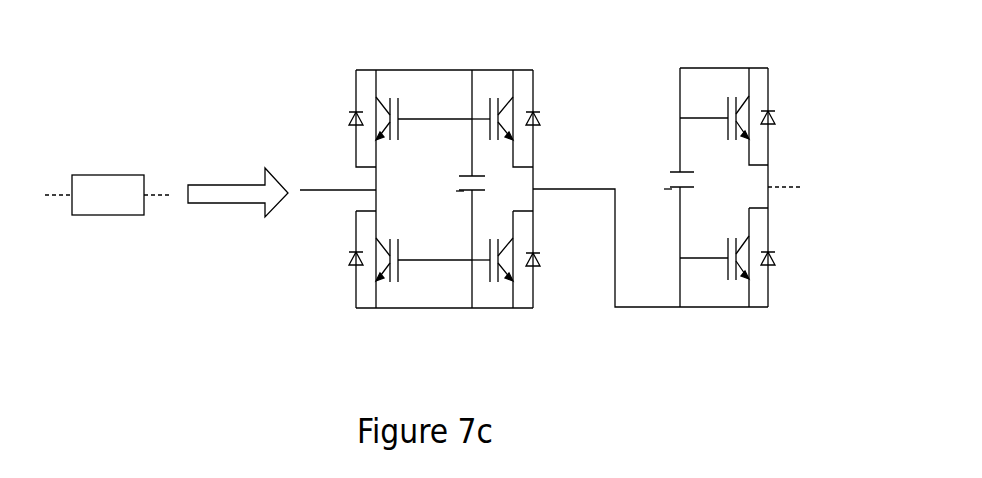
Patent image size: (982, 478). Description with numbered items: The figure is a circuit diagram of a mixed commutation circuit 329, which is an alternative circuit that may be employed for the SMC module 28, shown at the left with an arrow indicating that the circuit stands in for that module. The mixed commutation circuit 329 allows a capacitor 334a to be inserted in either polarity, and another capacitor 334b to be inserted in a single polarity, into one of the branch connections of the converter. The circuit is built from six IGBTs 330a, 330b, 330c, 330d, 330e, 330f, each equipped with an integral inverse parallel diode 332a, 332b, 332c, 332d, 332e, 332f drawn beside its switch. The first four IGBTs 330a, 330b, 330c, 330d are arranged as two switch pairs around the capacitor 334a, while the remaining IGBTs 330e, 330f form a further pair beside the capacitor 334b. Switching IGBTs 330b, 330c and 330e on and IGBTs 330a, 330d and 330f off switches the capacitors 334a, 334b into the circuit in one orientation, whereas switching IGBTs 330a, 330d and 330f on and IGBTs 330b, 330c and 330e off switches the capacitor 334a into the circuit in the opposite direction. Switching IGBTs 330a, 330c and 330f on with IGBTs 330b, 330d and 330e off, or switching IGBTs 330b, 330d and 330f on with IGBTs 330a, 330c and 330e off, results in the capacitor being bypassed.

The SMC module 28 is at (110, 175).
The mixed commutation circuit 329 is at (252, 73).
The IGBT 330a is at (391, 98).
The IGBT 330b is at (390, 284).
The IGBT 330c is at (496, 98).
The IGBT 330d is at (496, 284).
The IGBT 330e is at (726, 110).
The IGBT 330f is at (727, 266).
The integral inverse parallel diode 332a is at (348, 118).
The integral inverse parallel diode 332b is at (348, 260).
The integral inverse parallel diode 332c is at (537, 112).
The integral inverse parallel diode 332d is at (532, 270).
The integral inverse parallel diode 332e is at (771, 108).
The integral inverse parallel diode 332f is at (772, 268).
The capacitor 334a is at (471, 184).
The capacitor 334b is at (687, 171).